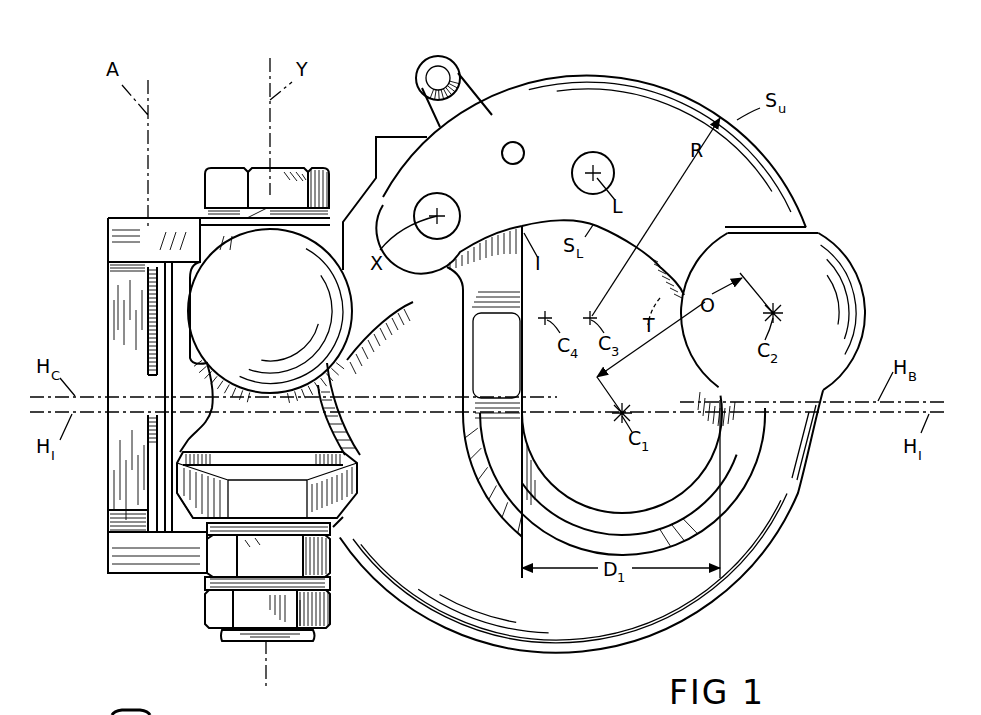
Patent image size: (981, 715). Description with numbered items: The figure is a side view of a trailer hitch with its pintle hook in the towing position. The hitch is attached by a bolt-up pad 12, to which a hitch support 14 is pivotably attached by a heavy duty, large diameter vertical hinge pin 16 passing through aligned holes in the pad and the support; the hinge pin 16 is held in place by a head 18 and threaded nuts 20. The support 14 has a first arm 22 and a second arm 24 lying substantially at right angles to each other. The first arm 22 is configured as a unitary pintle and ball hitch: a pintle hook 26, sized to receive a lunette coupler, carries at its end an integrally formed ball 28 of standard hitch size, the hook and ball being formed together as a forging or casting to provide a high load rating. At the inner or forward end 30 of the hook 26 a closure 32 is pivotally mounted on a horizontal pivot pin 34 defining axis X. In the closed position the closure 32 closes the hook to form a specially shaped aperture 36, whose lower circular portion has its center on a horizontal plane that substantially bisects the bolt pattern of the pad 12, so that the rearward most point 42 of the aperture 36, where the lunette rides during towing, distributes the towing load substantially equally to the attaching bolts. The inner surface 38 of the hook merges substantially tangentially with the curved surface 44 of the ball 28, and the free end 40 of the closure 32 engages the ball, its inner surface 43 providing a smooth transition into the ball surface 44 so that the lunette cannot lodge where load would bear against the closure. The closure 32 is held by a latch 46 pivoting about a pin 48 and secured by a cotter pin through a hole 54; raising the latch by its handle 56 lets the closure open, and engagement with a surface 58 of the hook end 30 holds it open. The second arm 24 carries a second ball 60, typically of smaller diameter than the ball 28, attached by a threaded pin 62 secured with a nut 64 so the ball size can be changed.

The bolt-up pad 12 is at (104, 238).
The hitch support 14 is at (188, 374).
The vertical hinge pin 16 is at (287, 165).
The head 18 is at (232, 182).
The threaded nuts 20 is at (332, 607).
The first arm 22 is at (793, 500).
The second arm 24 is at (363, 496).
The pintle hook 26 is at (666, 626).
The ball 28 is at (797, 292).
The inner or forward end of hook 30 is at (424, 388).
The closure 32 is at (680, 102).
The horizontal pivot pin 34 is at (435, 205).
The aperture 36 is at (609, 465).
The inner surface of the hook 38 is at (680, 496).
The free end of closure 40 is at (790, 233).
The rearward most point of aperture 42 is at (720, 412).
The inner surface of closure 43 is at (627, 271).
The curved surface of the ball 44 is at (683, 338).
The latch 46 is at (476, 73).
The pin 48 is at (601, 168).
The hole 54 is at (522, 149).
The handle 56 is at (424, 64).
The surface of hook end 58 is at (393, 136).
The second ball 60 is at (277, 286).
The threaded pin 62 is at (222, 595).
The nut 64 is at (217, 554).